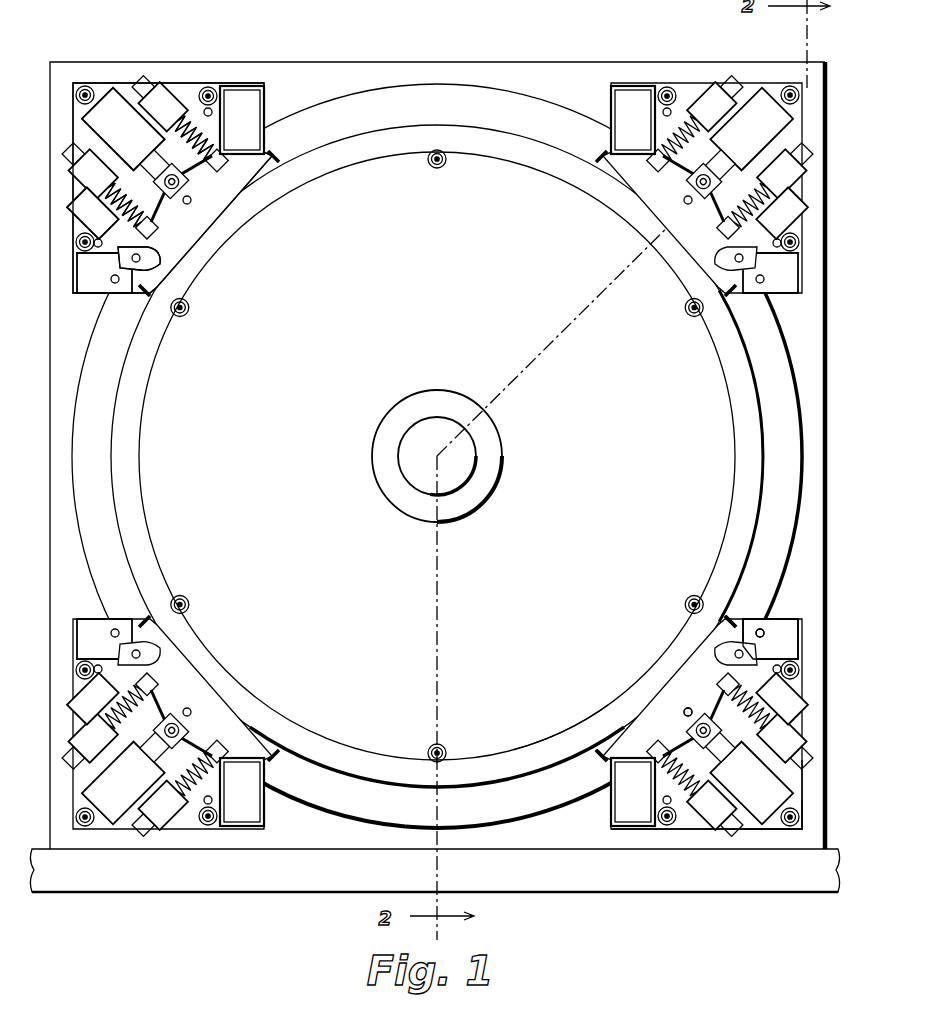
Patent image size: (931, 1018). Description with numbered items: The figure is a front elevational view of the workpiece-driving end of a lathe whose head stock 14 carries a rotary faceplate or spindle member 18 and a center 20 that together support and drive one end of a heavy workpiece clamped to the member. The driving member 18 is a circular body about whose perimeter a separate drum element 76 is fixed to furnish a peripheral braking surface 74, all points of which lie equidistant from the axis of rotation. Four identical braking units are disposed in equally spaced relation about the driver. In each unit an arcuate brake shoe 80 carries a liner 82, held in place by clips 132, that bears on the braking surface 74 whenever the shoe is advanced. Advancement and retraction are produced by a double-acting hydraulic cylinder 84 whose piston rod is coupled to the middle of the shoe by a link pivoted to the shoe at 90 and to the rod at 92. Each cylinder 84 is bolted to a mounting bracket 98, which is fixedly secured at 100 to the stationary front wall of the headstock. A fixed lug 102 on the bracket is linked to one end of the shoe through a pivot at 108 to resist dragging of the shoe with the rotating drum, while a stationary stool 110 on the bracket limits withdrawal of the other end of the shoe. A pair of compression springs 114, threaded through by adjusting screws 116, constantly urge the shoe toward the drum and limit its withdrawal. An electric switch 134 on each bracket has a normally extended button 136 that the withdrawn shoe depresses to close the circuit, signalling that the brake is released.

The head stock 14 is at (268, 882).
The rotary faceplate or spindle member 18 is at (478, 763).
The center 20 is at (412, 446).
The peripheral braking surface 74 is at (378, 829).
The drum element 76 is at (552, 815).
The arcuate brake shoe 80 is at (236, 177).
The liner 82 is at (607, 750).
The double-acting hydraulic cylinder 84 is at (118, 120).
The pivot 90 is at (688, 708).
The pivot 92 is at (640, 740).
The mounting bracket 98 is at (183, 87).
The securing point 100 is at (690, 826).
The fixed lug 102 is at (780, 632).
The pivot 108 is at (760, 629).
The stationary stool 110 is at (645, 806).
The compression spring 114 is at (197, 120).
The adjusting screw 116 is at (803, 795).
The clip 132 is at (733, 614).
The electric switch 134 is at (73, 222).
The contact or button 136 is at (122, 248).